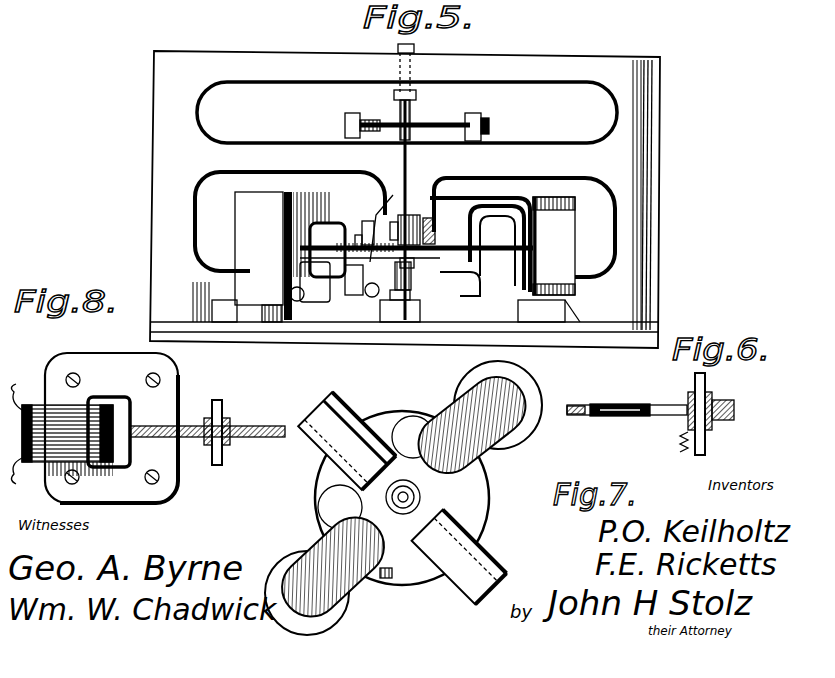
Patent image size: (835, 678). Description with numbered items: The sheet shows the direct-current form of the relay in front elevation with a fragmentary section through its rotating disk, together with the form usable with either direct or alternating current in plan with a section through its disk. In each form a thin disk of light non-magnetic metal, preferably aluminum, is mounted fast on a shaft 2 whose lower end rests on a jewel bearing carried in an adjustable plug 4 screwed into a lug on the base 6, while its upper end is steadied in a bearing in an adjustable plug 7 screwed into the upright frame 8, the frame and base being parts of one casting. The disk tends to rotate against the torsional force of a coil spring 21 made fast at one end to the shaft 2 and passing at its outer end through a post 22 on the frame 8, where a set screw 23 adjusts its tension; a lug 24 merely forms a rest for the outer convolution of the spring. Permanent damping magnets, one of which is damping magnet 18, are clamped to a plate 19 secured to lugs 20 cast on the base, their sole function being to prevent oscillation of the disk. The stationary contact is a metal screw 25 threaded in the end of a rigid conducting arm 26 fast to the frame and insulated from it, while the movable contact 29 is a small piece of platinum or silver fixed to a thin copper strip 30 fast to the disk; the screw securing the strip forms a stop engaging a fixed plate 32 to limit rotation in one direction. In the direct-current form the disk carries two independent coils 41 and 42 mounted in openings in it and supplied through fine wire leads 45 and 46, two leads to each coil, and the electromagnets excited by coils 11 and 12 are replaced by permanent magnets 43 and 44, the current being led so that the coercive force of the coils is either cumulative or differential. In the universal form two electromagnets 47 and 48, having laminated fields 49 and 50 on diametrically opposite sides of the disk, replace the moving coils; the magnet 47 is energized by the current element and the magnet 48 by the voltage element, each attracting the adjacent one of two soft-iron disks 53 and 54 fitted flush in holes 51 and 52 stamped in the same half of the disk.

In FIG. 5, the shaft 2 is at (412, 112).
In FIG. 8, the shaft 2 is at (224, 418).
In FIG. 7, the shaft 2 is at (403, 515).
In FIG. 6, the shaft 2 is at (695, 382).
In FIG. 5, the adjustable plug 4 is at (408, 302).
In FIG. 5, the base 6 is at (404, 306).
In FIG. 5, the adjustable plug 7 is at (415, 52).
In FIG. 5, the upright frame 8 is at (405, 199).
In FIG. 7, the upright frame 8 is at (405, 485).
In FIG. 5, the coil 11 is at (523, 250).
In FIG. 6, the coil 11 is at (580, 405).
In FIG. 8, the coil 12 is at (190, 442).
In FIG. 7, the coil 12 is at (485, 503).
In FIG. 5, the permanent damping magnet 18 is at (559, 237).
In FIG. 7, the permanent damping magnet 18 is at (480, 560).
In FIG. 5, the plate 19 is at (567, 306).
In FIG. 7, the plate 19 is at (345, 410).
In FIG. 5, the lugs 20 is at (541, 312).
In FIG. 5, the coil spring 21 is at (383, 97).
In FIG. 7, the coil spring 21 is at (420, 497).
In FIG. 5, the post 22 is at (431, 113).
In FIG. 5, the set screw 23 is at (492, 126).
In FIG. 5, the lug 24 is at (345, 125).
In FIG. 5, the metal screw 25 is at (434, 230).
In FIG. 5, the rigid arm 26 is at (412, 214).
In FIG. 5, the movable contact 29 is at (380, 200).
In FIG. 7, the movable contact 29 is at (405, 585).
In FIG. 5, the metal strip 30 is at (364, 224).
In FIG. 7, the metal strip 30 is at (385, 580).
In FIG. 5, the fixed plate 32 is at (312, 283).
In FIG. 5, the coil 41 is at (330, 240).
In FIG. 6, the coil 41 is at (622, 416).
In FIG. 5, the coil 42 is at (416, 258).
In FIG. 5, the permanent magnet 43 is at (247, 200).
In FIG. 5, the permanent magnet 44 is at (523, 196).
In FIG. 5, the fine wire leads 45 is at (368, 295).
In FIG. 6, the fine wire leads 45 is at (682, 435).
In FIG. 5, the fine wire leads 46 is at (414, 262).
In FIG. 6, the fine wire leads 46 is at (722, 422).
In FIG. 8, the electromagnet 47 is at (42, 448).
In FIG. 7, the electromagnet 47 is at (288, 580).
In FIG. 7, the electromagnet 48 is at (485, 448).
In FIG. 8, the laminated field 49 is at (86, 360).
In FIG. 7, the laminated field 49 is at (325, 555).
In FIG. 7, the laminated field 50 is at (515, 433).
In FIG. 7, the hole 51 is at (335, 487).
In FIG. 7, the hole 52 is at (410, 416).
In FIG. 7, the magnetic metal disk 53 is at (330, 507).
In FIG. 8, the magnetic metal disk 54 is at (270, 438).
In FIG. 7, the magnetic metal disk 54 is at (413, 437).